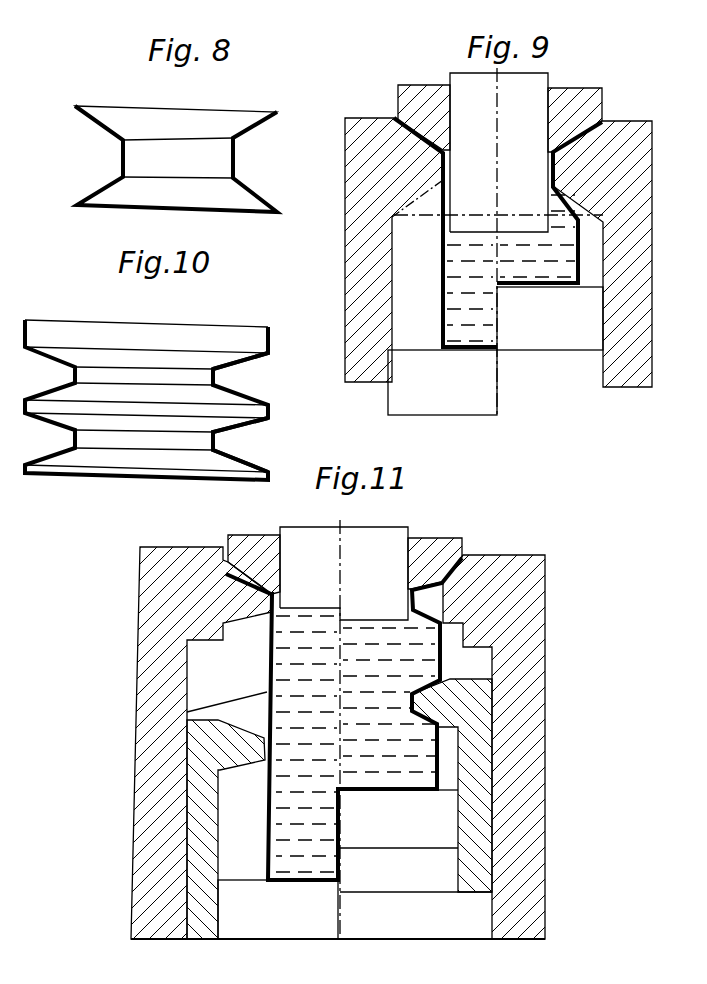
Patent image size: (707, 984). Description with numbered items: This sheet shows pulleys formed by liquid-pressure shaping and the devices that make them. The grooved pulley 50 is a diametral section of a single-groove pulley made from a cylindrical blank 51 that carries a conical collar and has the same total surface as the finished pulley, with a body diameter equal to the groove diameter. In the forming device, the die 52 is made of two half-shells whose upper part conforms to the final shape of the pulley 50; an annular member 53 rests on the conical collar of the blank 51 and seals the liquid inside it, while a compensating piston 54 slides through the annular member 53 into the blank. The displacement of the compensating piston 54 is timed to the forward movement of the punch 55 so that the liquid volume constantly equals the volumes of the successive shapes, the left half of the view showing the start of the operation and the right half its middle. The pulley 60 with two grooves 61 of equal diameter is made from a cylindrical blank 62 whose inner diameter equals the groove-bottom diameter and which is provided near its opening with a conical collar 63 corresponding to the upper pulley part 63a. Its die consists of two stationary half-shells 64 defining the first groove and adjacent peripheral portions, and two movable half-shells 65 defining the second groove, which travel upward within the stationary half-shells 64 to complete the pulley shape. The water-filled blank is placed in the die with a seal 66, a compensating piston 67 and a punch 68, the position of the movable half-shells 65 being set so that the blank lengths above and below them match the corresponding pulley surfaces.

In FIG. 8, the grooved pulley 50 is at (236, 118).
In FIG. 9, the cylindrical blank 51 is at (442, 250).
In FIG. 9, the die 52 is at (362, 167).
In FIG. 9, the annular member 53 is at (423, 102).
In FIG. 9, the compensating piston 54 is at (523, 97).
In FIG. 9, the punch 55 is at (560, 340).
In FIG. 10, the pulley 60 is at (148, 414).
In FIG. 10, the grooves 61 is at (218, 450).
In FIG. 10, the upper pulley part 63a is at (266, 352).
In FIG. 11, the cylindrical blank 62 is at (187, 707).
In FIG. 11, the conical collar 63 is at (223, 576).
In FIG. 11, the stationary half-shells 64 is at (503, 620).
In FIG. 11, the movable half-shells 65 is at (453, 710).
In FIG. 11, the seal 66 is at (445, 555).
In FIG. 11, the compensating piston 67 is at (327, 543).
In FIG. 11, the punch 68 is at (432, 837).